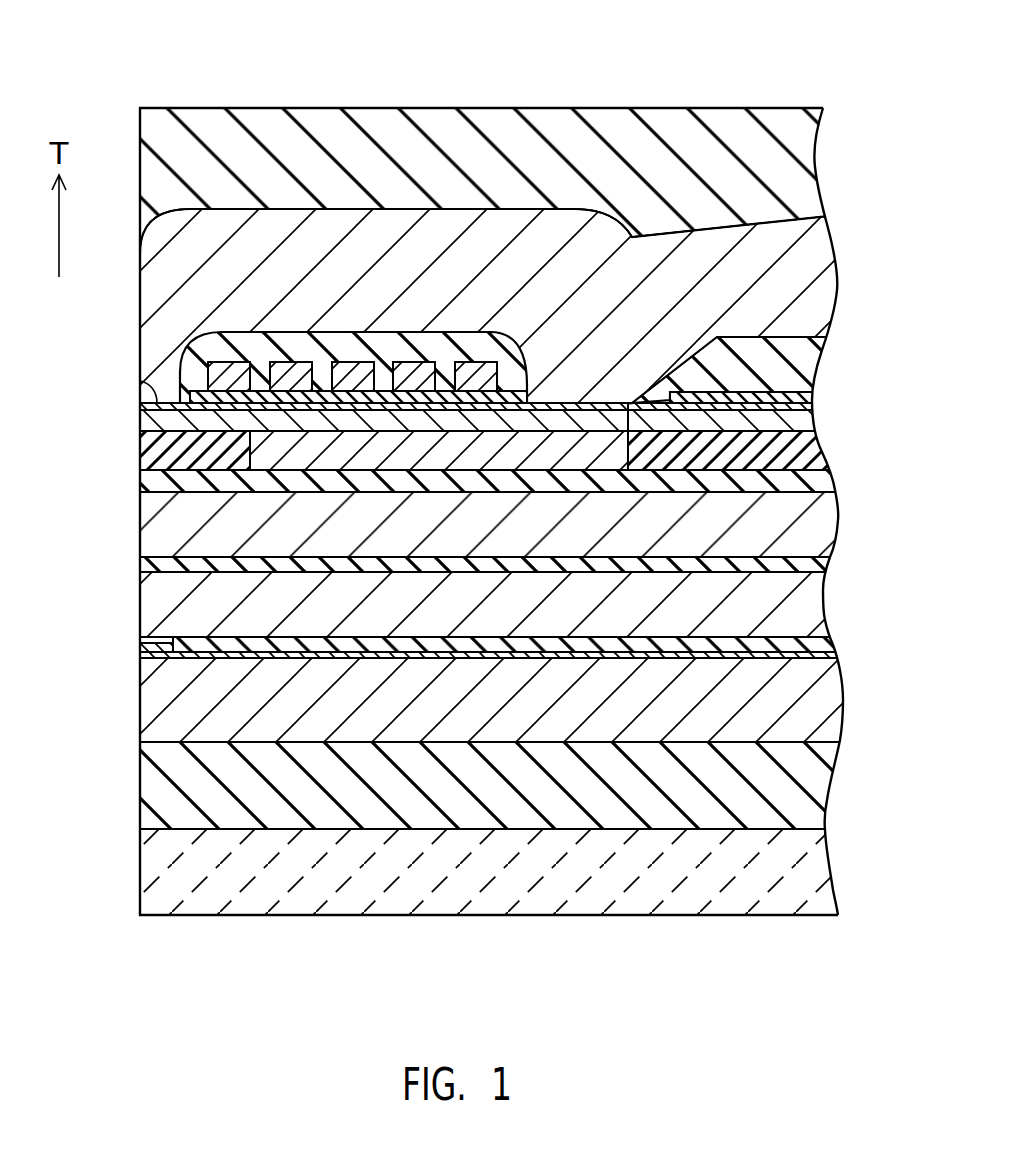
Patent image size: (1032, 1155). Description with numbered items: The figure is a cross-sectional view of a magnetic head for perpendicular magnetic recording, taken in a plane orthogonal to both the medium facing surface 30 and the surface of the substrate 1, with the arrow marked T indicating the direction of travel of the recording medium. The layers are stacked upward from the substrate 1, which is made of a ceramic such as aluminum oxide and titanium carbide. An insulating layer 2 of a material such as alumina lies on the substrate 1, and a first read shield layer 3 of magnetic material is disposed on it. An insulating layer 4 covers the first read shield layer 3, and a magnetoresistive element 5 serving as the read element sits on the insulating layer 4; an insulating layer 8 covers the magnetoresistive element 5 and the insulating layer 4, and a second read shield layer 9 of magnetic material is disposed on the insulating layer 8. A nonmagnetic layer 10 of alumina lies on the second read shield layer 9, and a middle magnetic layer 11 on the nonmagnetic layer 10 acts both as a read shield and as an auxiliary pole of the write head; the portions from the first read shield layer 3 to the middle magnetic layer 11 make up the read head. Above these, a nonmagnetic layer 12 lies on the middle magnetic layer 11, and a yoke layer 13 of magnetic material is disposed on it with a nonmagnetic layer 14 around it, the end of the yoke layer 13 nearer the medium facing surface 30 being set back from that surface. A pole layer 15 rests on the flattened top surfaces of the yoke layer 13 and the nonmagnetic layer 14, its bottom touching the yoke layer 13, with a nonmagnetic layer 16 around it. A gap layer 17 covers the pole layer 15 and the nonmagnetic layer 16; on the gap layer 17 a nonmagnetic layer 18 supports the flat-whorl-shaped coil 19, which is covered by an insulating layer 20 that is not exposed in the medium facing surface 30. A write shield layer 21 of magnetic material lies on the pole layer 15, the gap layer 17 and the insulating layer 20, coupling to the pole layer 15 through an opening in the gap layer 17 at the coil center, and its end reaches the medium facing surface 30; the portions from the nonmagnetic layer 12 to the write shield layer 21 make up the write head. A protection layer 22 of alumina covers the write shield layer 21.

The substrate 1 is at (203, 908).
The insulating layer 2 is at (250, 820).
The first read shield layer 3 is at (312, 732).
The insulating layer 4 is at (372, 653).
The magnetoresistive (MR) element 5 is at (162, 652).
The insulating layer 8 is at (437, 640).
The second read shield layer 9 is at (487, 627).
The nonmagnetic layer 10 is at (538, 563).
The middle magnetic layer 11 is at (590, 533).
The nonmagnetic layer 12 is at (822, 470).
The yoke layer 13 is at (268, 470).
The nonmagnetic layer 14 is at (140, 452).
The pole layer 15 is at (138, 420).
The nonmagnetic layer 16 is at (822, 412).
The gap layer 17 is at (140, 381).
The nonmagnetic layer 18 is at (527, 397).
The coil 19 is at (217, 358).
The insulating layer 20 is at (500, 333).
The write shield layer 21 is at (338, 215).
The protection layer 22 is at (437, 118).
The medium facing surface 30 is at (127, 397).